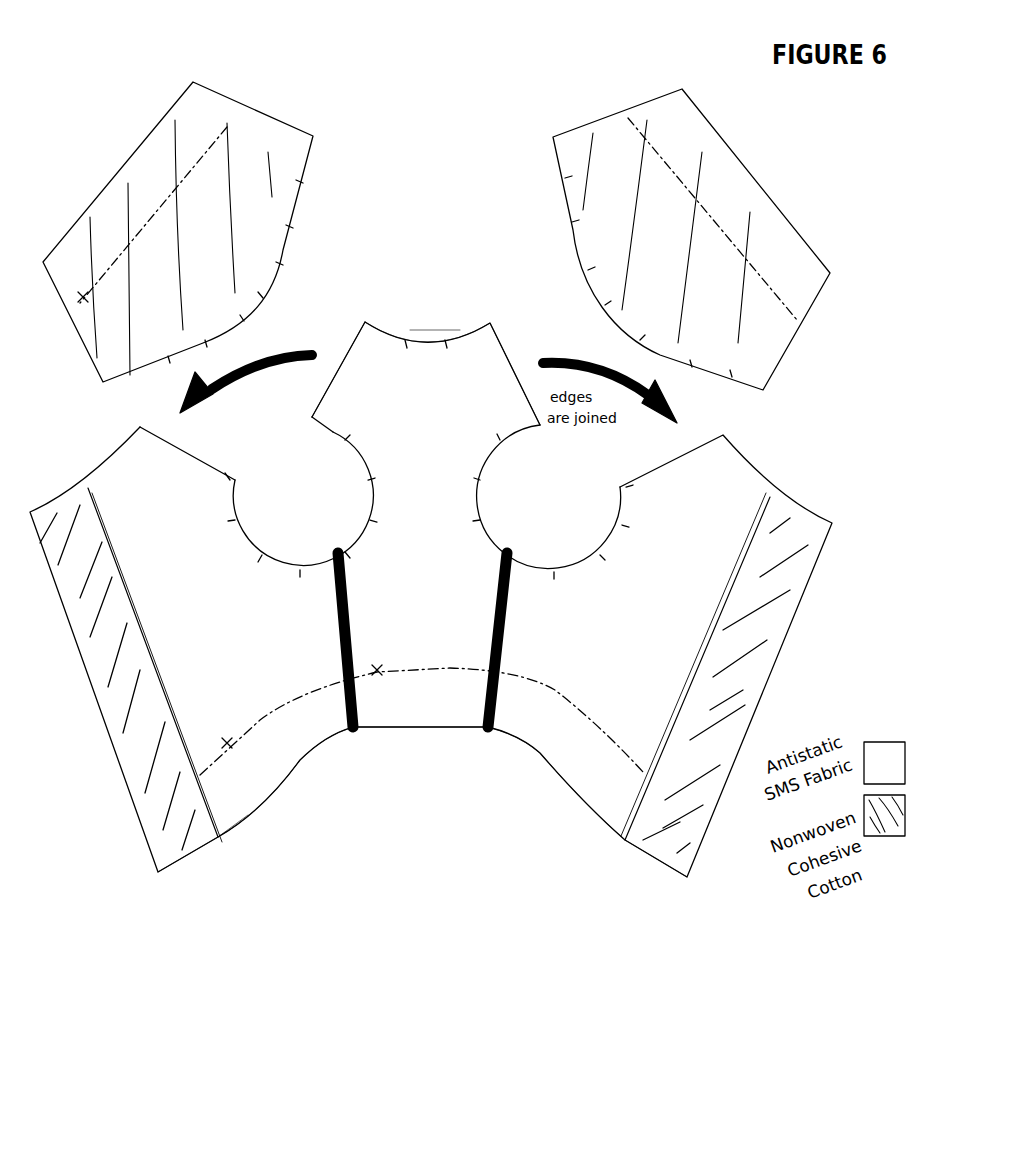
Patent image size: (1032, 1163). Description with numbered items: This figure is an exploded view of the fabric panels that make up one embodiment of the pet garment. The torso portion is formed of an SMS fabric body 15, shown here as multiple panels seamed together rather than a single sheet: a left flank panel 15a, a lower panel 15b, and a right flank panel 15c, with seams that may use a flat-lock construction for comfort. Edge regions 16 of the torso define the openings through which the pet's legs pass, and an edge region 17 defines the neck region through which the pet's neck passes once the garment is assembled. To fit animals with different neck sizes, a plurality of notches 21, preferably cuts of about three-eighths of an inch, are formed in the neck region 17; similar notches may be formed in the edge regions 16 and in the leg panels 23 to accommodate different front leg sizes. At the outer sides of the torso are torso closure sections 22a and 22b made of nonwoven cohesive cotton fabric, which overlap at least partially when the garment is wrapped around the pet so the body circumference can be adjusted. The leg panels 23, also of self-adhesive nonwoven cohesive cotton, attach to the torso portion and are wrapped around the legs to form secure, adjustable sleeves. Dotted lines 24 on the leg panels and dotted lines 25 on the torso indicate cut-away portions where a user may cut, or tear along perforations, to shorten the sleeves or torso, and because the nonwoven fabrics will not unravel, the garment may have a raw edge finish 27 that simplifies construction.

The SMS fabric body 15 is at (436, 404).
The left flank panel 15a is at (278, 732).
The lower panel 15b is at (407, 727).
The right flank panel 15c is at (560, 733).
The edge regions 16 is at (429, 502).
The edge region 17 is at (452, 320).
The notches 21 is at (407, 337).
The torso closure section 22a is at (120, 707).
The torso closure section 22b is at (780, 610).
The leg panels 23 is at (778, 250).
The dotted lines 24 is at (230, 120).
The dotted lines 25 is at (658, 787).
The raw edge finish 27 is at (248, 813).